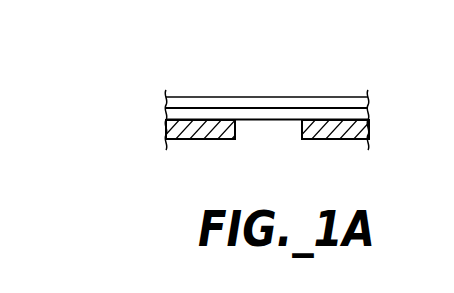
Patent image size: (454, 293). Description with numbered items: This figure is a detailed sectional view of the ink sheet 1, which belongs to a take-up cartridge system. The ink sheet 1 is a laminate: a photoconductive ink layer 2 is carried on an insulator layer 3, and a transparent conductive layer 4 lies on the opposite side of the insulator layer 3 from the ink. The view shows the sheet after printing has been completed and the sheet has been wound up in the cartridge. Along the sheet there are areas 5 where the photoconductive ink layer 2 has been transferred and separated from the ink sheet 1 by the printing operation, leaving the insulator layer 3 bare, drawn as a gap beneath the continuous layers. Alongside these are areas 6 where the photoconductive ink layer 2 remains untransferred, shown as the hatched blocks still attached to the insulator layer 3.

The ink sheet 1 is at (333, 90).
The photoconductive ink layer 2 is at (368, 128).
The insulator layer 3 is at (368, 107).
The transparent conductive layer 4 is at (368, 100).
The areas where photoconductive ink layer has been transferred 5 is at (267, 121).
The areas where photoconductive ink layer remains untransferred 6 is at (335, 140).